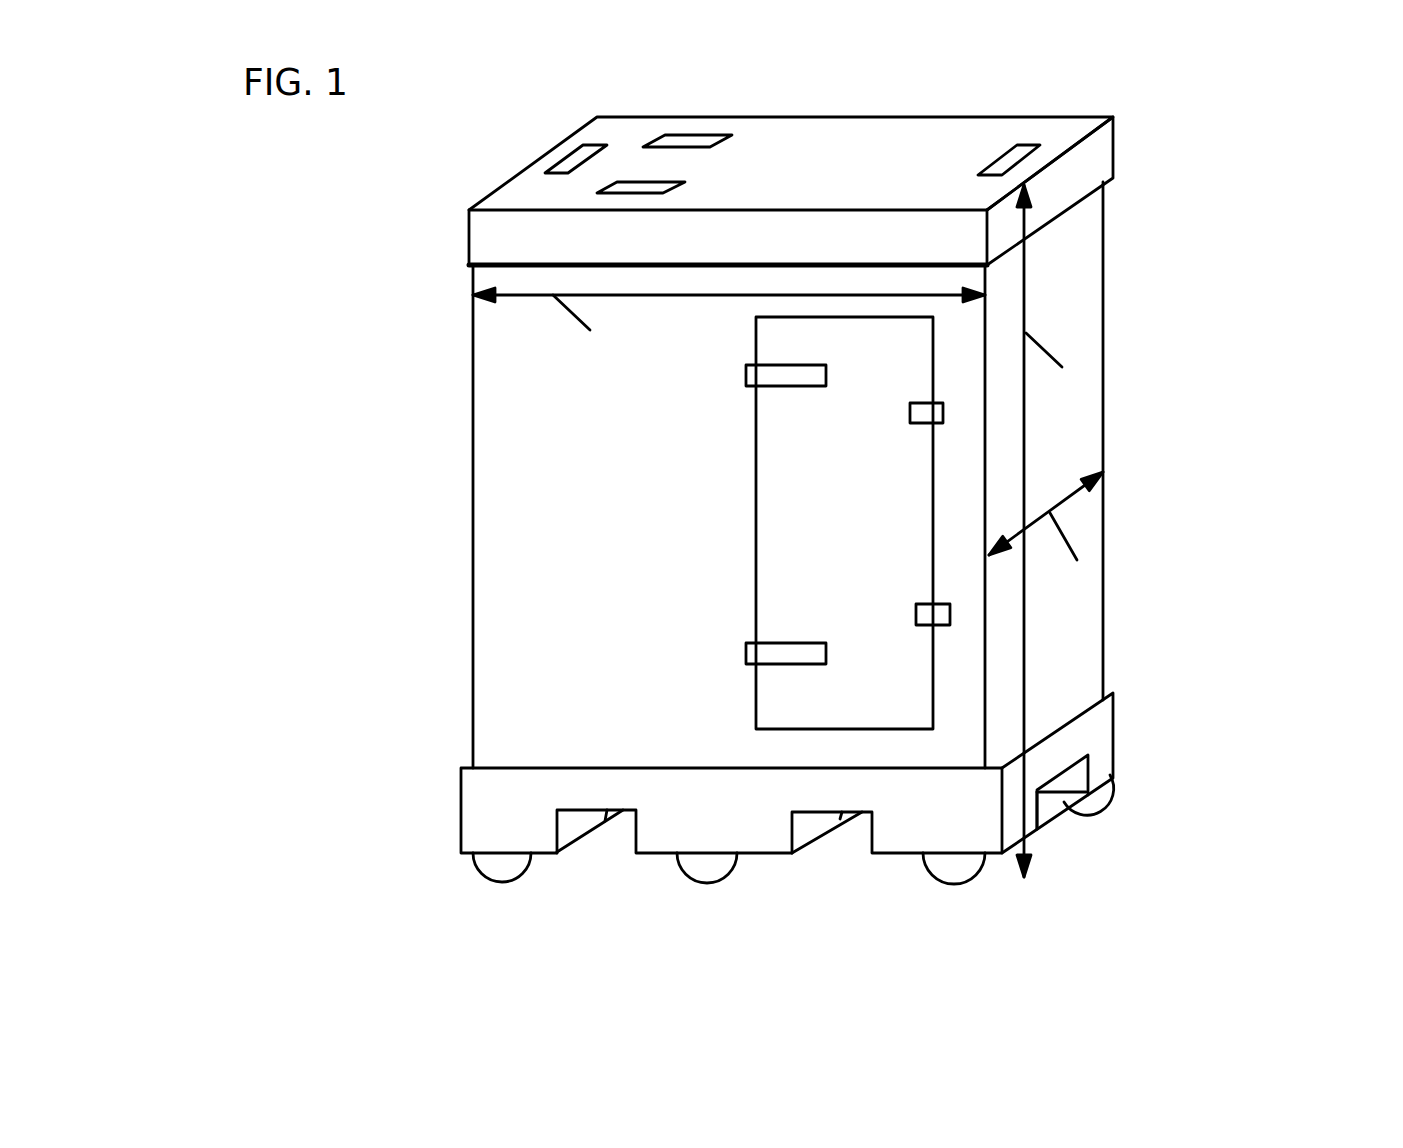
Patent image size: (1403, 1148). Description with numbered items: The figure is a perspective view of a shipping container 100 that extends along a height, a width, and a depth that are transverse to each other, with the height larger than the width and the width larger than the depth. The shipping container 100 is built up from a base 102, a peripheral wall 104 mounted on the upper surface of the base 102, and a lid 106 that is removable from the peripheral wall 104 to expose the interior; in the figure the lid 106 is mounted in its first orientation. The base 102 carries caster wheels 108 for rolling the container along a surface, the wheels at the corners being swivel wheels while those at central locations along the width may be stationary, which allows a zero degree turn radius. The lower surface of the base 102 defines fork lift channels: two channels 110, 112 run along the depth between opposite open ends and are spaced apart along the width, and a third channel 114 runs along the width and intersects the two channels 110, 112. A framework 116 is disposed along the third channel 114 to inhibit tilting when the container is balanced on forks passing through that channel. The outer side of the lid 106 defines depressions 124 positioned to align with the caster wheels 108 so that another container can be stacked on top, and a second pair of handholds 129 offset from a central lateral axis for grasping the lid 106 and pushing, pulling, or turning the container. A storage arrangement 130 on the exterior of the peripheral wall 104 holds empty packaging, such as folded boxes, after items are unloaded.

The shipping container 100 is at (1180, 278).
The base 102 is at (460, 807).
The peripheral wall 104 is at (498, 465).
The lid 106 is at (863, 133).
The caster wheels 108 is at (487, 882).
The fork lift channel 110 is at (633, 830).
The fork lift channel 112 is at (860, 812).
The third channel 114 is at (1070, 780).
The framework 116 is at (1048, 803).
The depressions 124 is at (567, 150).
The handholds 129 is at (678, 142).
The storage arrangement 130 is at (792, 504).